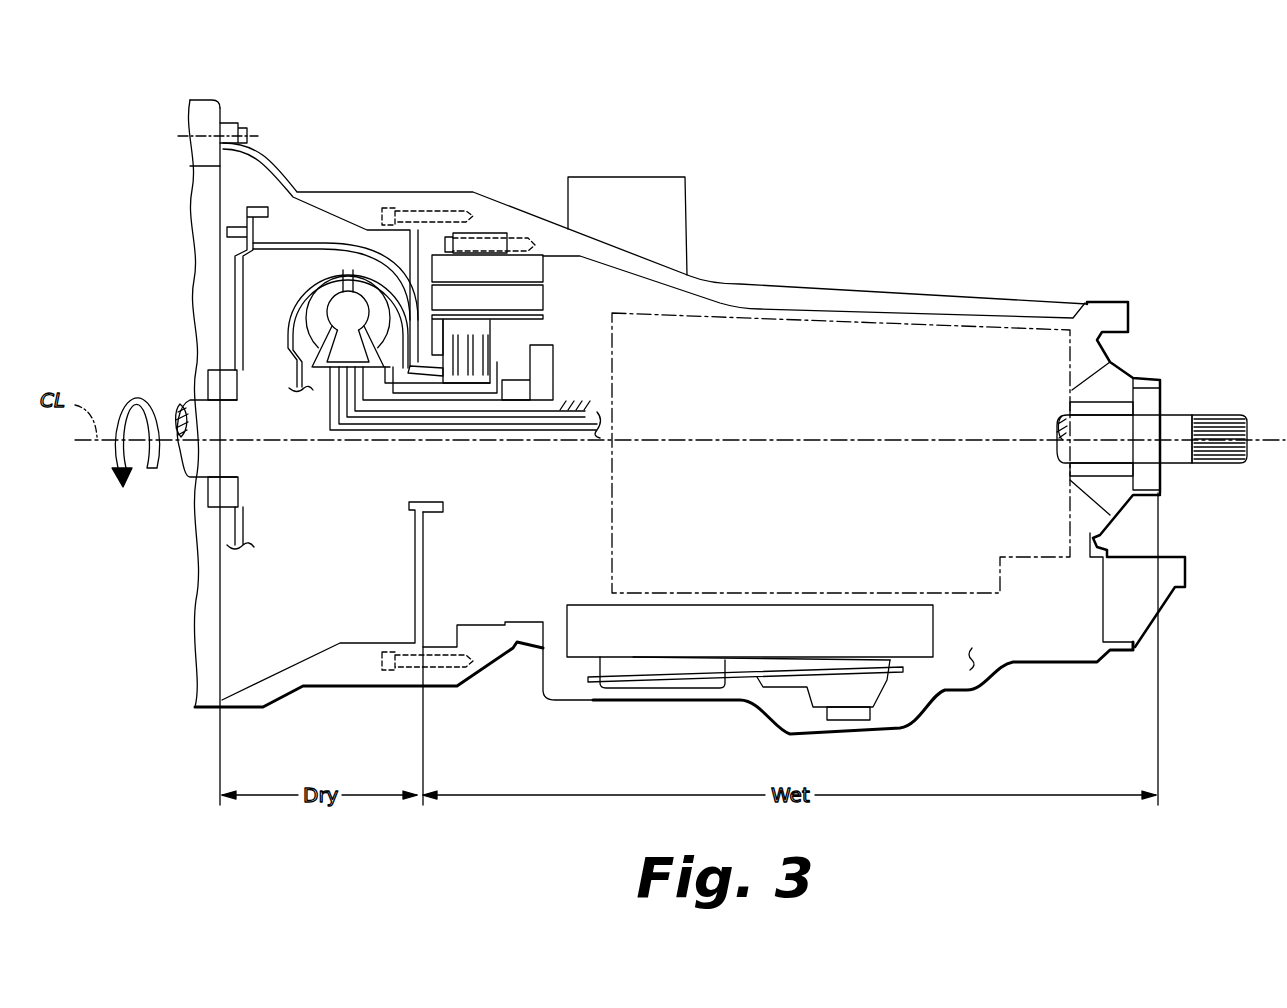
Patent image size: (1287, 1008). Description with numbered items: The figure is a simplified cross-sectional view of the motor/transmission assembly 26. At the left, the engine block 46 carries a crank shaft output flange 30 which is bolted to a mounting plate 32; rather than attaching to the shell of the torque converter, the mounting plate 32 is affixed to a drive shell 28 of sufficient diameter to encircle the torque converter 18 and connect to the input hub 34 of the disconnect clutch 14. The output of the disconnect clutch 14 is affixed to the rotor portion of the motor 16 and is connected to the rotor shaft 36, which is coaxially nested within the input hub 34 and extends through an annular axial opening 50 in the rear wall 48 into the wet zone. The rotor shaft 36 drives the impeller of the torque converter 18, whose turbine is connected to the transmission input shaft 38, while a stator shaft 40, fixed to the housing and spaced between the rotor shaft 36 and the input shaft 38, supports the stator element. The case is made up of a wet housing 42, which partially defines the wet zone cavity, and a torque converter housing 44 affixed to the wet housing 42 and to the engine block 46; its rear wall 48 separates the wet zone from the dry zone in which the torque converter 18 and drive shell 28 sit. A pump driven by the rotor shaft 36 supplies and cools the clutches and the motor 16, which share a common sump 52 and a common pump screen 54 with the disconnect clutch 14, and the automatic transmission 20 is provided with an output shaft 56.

The disconnect clutch 14 is at (527, 343).
The motor 16 is at (520, 253).
The torque converter 18 is at (386, 289).
The automatic transmission 20 is at (905, 313).
The motor/transmission assembly 26 is at (757, 170).
The drive shell 28 is at (293, 242).
The crank shaft output flange 30 is at (200, 390).
The mounting plate 32 is at (222, 312).
The input hub 34 is at (393, 388).
The rotor shaft 36 is at (413, 400).
The transmission input shaft 38 is at (535, 431).
The stator shaft 40 is at (490, 427).
The wet housing 42 is at (790, 283).
The torque converter housing 44 is at (277, 150).
The engine block 46 is at (190, 127).
The rear wall 48 is at (413, 550).
The annular axial opening 50 is at (437, 482).
The sump 52 is at (975, 665).
The pump screen 54 is at (895, 695).
The output shaft 56 is at (1172, 413).